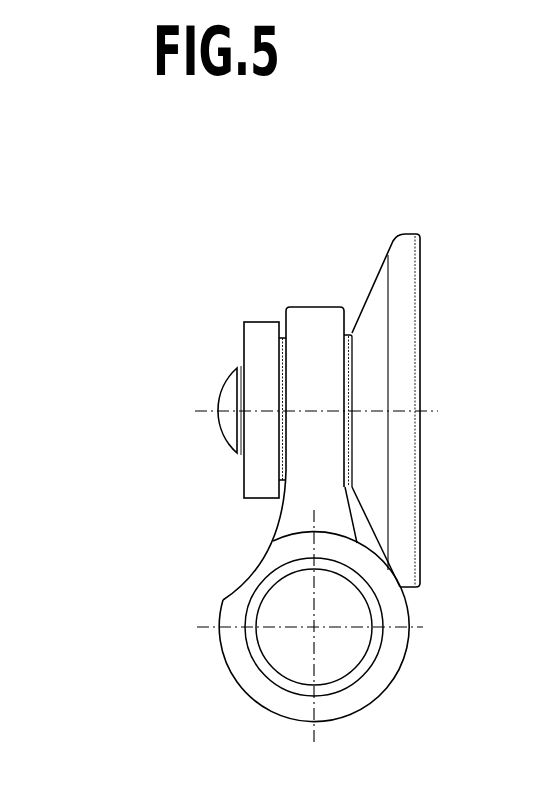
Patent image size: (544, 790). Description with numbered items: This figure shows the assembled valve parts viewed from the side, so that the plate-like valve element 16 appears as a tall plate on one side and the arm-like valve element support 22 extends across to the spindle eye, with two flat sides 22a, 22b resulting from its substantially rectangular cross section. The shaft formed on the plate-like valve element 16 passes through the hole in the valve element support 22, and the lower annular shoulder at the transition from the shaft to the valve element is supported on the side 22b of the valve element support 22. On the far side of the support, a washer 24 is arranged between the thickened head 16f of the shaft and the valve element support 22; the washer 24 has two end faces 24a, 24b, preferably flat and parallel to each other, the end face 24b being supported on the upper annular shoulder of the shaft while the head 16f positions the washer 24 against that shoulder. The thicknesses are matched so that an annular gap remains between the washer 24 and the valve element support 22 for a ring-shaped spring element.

The plate-like valve element 16 is at (397, 433).
The thickened head 16f is at (228, 418).
The valve element support 22 is at (320, 330).
The flat side 22a is at (280, 462).
The flat side 22b is at (353, 321).
The washer 24 is at (263, 342).
The end face 24a is at (243, 340).
The end face 24b is at (287, 364).